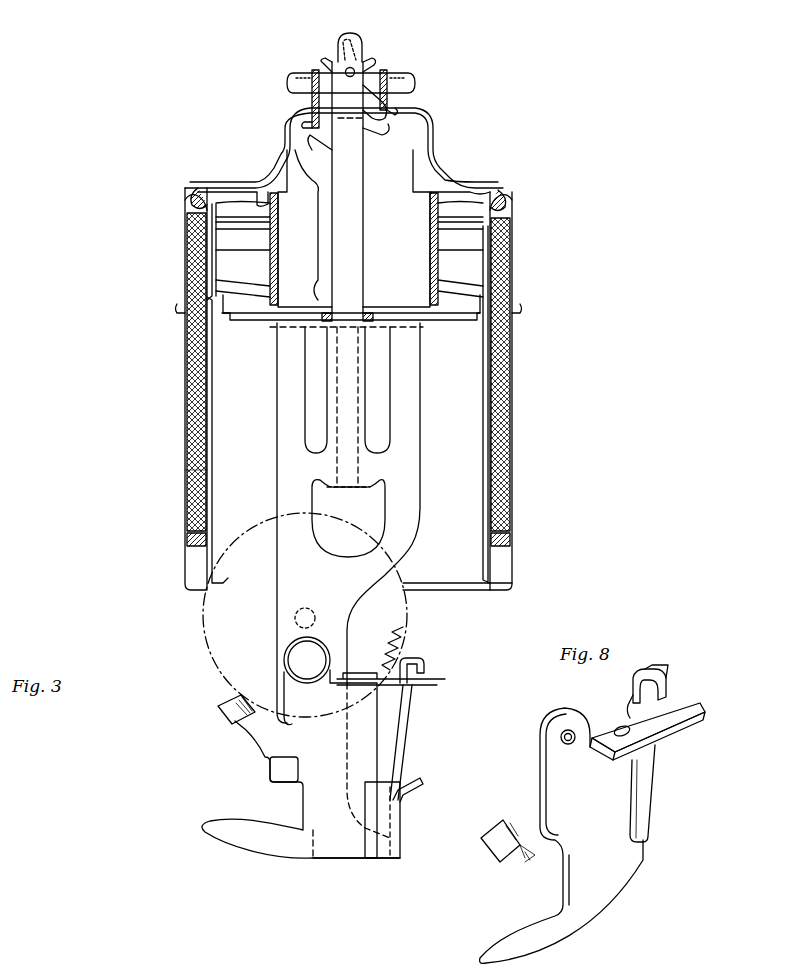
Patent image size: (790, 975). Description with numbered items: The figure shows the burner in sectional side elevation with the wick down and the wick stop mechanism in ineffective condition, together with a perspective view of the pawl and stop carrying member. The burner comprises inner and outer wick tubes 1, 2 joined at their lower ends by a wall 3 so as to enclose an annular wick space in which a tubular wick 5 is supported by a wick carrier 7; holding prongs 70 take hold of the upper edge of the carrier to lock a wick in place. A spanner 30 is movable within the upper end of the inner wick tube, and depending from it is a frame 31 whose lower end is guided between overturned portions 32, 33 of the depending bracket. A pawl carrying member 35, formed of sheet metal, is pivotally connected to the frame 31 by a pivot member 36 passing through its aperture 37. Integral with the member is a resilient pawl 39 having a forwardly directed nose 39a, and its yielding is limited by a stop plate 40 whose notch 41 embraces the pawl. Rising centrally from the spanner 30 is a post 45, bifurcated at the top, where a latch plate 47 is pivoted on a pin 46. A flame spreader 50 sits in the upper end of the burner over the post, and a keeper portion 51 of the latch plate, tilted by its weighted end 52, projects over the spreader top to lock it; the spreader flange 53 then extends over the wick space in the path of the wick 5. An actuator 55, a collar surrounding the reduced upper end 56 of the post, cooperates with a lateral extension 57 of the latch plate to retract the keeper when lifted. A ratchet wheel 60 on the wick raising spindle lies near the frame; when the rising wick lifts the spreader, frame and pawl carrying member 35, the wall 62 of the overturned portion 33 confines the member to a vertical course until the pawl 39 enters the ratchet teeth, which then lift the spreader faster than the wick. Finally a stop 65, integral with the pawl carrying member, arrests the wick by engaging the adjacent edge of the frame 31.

In FIG. 3, the inner wick tube 1 is at (483, 430).
In FIG. 3, the outer wick tube 2 is at (512, 430).
In FIG. 3, the wall 3 is at (497, 592).
In FIG. 3, the tubular wick 5 is at (512, 250).
In FIG. 3, the wick carrier 7 is at (185, 467).
In FIG. 3, the spanner 30 is at (445, 320).
In FIG. 3, the frame 31 is at (405, 505).
In FIG. 3, the overturned portion 32 is at (272, 774).
In FIG. 3, the overturned portion 33 is at (385, 860).
In FIG. 3, the pawl carrying member 35 is at (296, 764).
In FIG. 8, the pawl carrying member 35 is at (561, 835).
In FIG. 3, the pivot member 36 is at (312, 648).
In FIG. 8, the aperture 37 is at (568, 745).
In FIG. 3, the pawl 39 is at (408, 733).
In FIG. 8, the pawl 39 is at (645, 762).
In FIG. 3, the nose 39a is at (402, 660).
In FIG. 8, the nose 39a is at (632, 700).
In FIG. 3, the stop plate 40 is at (438, 682).
In FIG. 8, the stop plate 40 is at (678, 700).
In FIG. 3, the notch 41 is at (426, 668).
In FIG. 8, the notch 41 is at (668, 680).
In FIG. 3, the post 45 is at (366, 215).
In FIG. 3, the pin 46 is at (363, 66).
In FIG. 3, the latch plate 47 is at (388, 128).
In FIG. 3, the flame spreader 50 is at (440, 172).
In FIG. 3, the keeper portion 51 is at (372, 82).
In FIG. 3, the weighted end 52 is at (330, 170).
In FIG. 3, the flange 53 is at (505, 200).
In FIG. 3, the actuator 55 is at (328, 62).
In FIG. 3, the reduced upper end 56 is at (362, 40).
In FIG. 3, the lateral extension 57 is at (342, 45).
In FIG. 3, the ratchet wheel 60 is at (376, 618).
In FIG. 3, the wall 62 is at (400, 830).
In FIG. 3, the stop 65 is at (228, 722).
In FIG. 8, the stop 65 is at (500, 860).
In FIG. 3, the holding prongs 70 is at (185, 401).